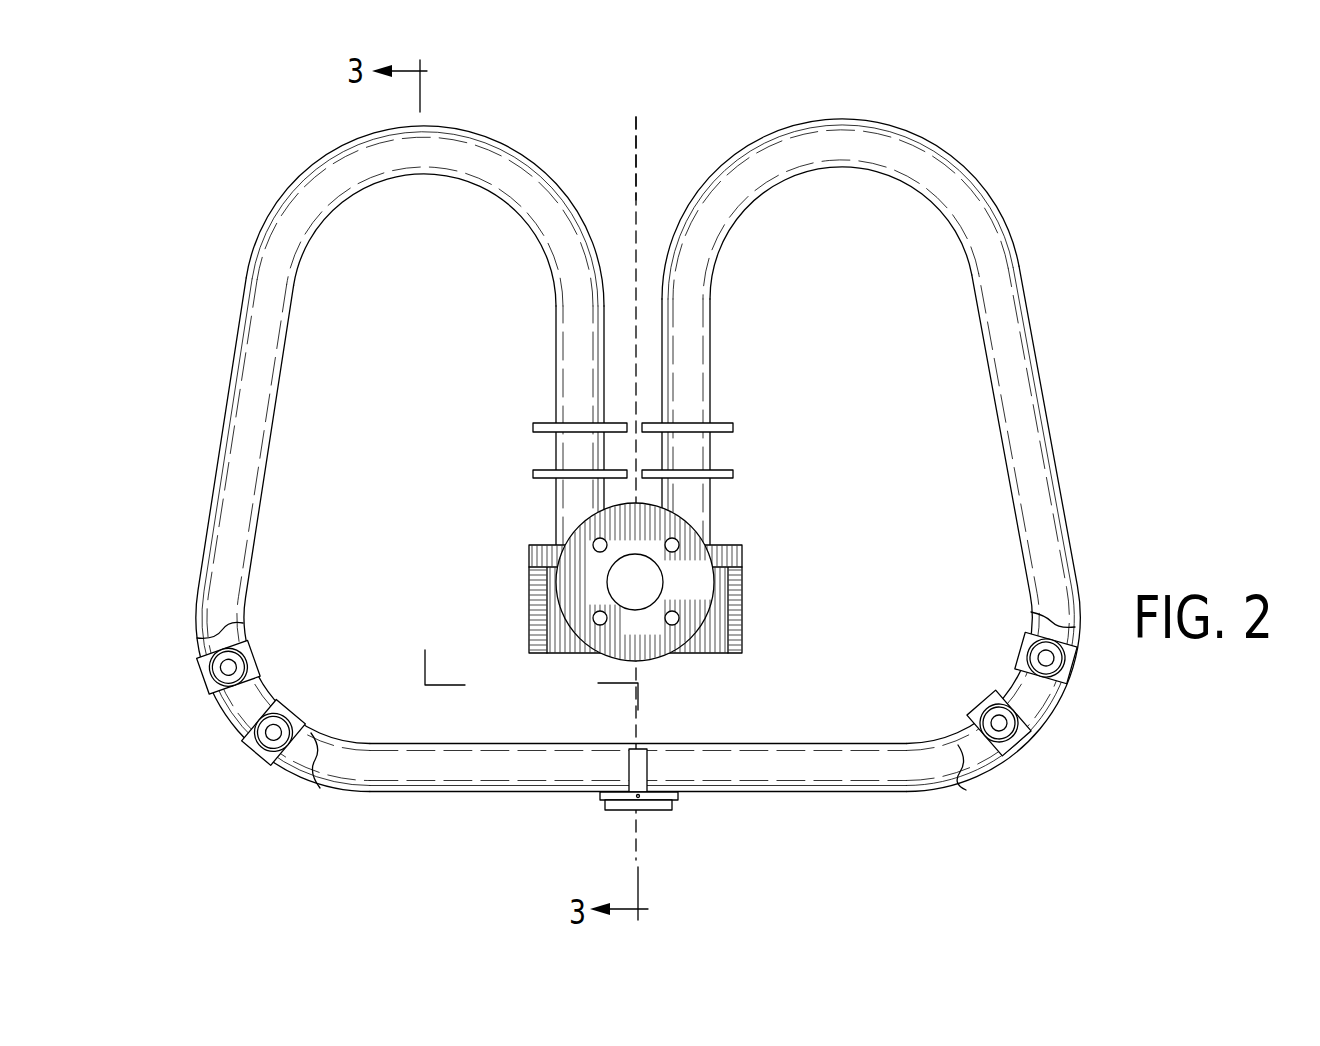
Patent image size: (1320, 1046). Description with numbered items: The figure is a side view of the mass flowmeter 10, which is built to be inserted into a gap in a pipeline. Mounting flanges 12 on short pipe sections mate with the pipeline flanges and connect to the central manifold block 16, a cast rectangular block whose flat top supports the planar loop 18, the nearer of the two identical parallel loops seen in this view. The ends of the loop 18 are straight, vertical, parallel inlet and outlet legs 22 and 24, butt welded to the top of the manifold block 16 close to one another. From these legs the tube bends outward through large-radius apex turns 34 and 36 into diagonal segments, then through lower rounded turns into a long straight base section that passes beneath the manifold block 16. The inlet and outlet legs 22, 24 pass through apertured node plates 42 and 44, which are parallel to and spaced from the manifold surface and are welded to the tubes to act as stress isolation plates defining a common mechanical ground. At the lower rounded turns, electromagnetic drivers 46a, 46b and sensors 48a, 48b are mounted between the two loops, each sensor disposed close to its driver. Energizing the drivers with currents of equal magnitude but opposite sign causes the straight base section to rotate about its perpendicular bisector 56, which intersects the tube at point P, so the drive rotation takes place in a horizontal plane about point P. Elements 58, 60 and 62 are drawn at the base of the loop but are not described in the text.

The mass flowmeter 10 is at (1048, 184).
The mounting flanges 12 is at (650, 650).
The manifold block 16 is at (740, 581).
The loop 18 is at (799, 212).
The inlet leg 22 is at (572, 452).
The outlet leg 24 is at (695, 450).
The apex turn 34 is at (343, 163).
The apex turn 36 is at (880, 142).
The node plate 42 is at (724, 480).
The node plate 44 is at (724, 422).
The electromagnetic driver 46a is at (206, 675).
The electromagnetic driver 46b is at (1072, 667).
The sensor 48a is at (264, 753).
The sensor 48b is at (1015, 745).
The perpendicular bisector 56 is at (635, 178).
The bottom cross tube 58 is at (552, 814).
The mounting plate 60 is at (673, 805).
The pin 62 is at (628, 765).
The point P is at (643, 797).